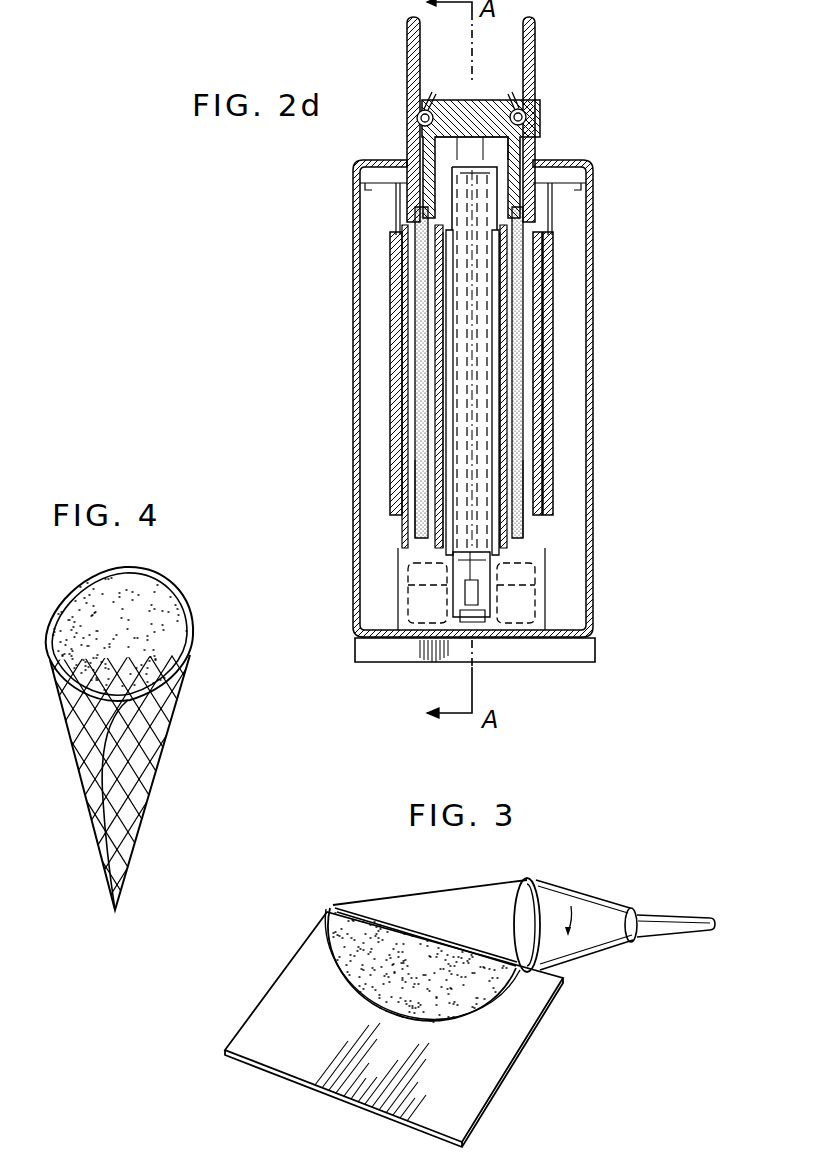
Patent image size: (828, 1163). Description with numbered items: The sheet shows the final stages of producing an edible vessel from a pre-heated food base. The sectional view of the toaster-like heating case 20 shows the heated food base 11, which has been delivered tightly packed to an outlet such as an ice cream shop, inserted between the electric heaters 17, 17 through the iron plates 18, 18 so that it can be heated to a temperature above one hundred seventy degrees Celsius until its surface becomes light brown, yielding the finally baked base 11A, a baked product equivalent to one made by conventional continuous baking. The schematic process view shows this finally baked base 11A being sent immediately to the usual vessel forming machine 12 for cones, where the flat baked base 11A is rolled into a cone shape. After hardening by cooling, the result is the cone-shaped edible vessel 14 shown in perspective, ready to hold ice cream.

In FIG. 2d, the heated food base 11 is at (410, 297).
In FIG. 2d, the finally baked base 11A is at (518, 287).
In FIG. 3, the finally baked base 11A is at (480, 1009).
In FIG. 3, the vessel forming machine 12 is at (438, 902).
In FIG. 4, the cone-shaped edible vessel 14 is at (84, 785).
In FIG. 2d, the electric heater 17 is at (398, 392).
In FIG. 2d, the iron plate 18 is at (408, 495).
In FIG. 2d, the heating case 20 is at (595, 372).